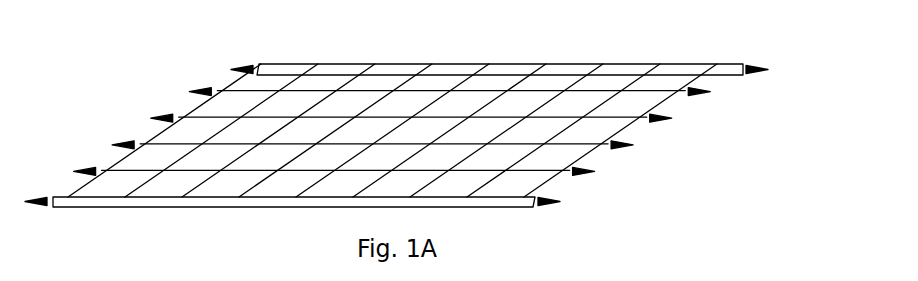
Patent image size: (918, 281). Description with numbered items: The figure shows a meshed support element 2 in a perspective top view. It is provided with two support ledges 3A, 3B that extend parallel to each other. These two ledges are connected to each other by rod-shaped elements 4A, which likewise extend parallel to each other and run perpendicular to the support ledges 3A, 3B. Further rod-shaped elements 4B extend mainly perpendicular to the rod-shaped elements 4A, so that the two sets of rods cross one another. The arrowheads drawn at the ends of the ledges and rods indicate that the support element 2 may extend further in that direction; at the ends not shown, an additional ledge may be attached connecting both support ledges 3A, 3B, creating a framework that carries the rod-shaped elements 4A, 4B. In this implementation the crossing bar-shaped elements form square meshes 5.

The meshed support element 2 is at (110, 34).
The support ledge 3A is at (453, 70).
The support ledge 3B is at (255, 203).
The rod-shaped elements 4A is at (300, 82).
The rod-shaped elements 4B is at (212, 117).
The square meshes 5 is at (592, 132).